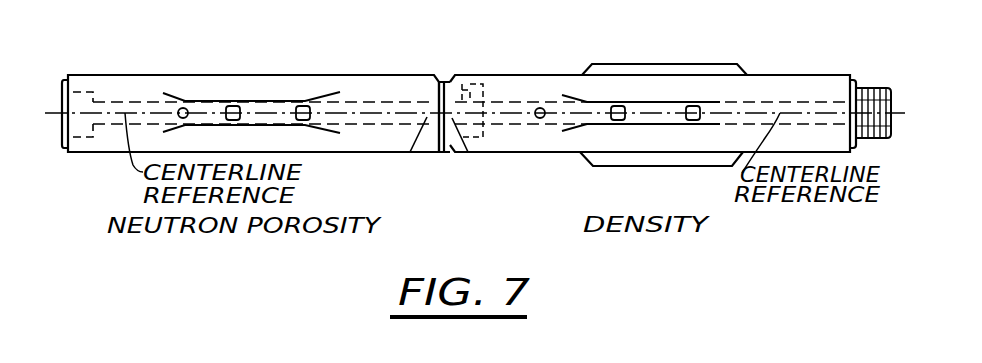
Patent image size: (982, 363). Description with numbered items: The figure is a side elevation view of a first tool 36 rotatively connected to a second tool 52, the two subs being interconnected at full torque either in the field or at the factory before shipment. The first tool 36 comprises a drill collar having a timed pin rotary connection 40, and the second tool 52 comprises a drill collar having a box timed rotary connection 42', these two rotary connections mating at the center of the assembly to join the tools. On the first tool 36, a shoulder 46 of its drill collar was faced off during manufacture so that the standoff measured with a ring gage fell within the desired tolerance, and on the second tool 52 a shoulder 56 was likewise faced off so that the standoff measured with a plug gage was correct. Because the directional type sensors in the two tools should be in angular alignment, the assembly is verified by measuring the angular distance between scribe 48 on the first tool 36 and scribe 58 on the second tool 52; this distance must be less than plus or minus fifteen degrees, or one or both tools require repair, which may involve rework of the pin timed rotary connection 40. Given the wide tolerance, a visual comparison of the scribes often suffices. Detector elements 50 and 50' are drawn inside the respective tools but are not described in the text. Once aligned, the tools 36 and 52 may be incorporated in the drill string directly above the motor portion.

The first tool 36 is at (164, 75).
The neutron detectors 50 is at (272, 82).
The timed pin rotary connection 40 is at (461, 80).
The box timed rotary connection 42' is at (481, 86).
The second tool 52 is at (522, 75).
The density detectors 50' is at (655, 75).
The scribe 48 is at (410, 152).
The shoulder 46 is at (439, 152).
The shoulder 56 is at (444, 152).
The scribe 58 is at (468, 152).